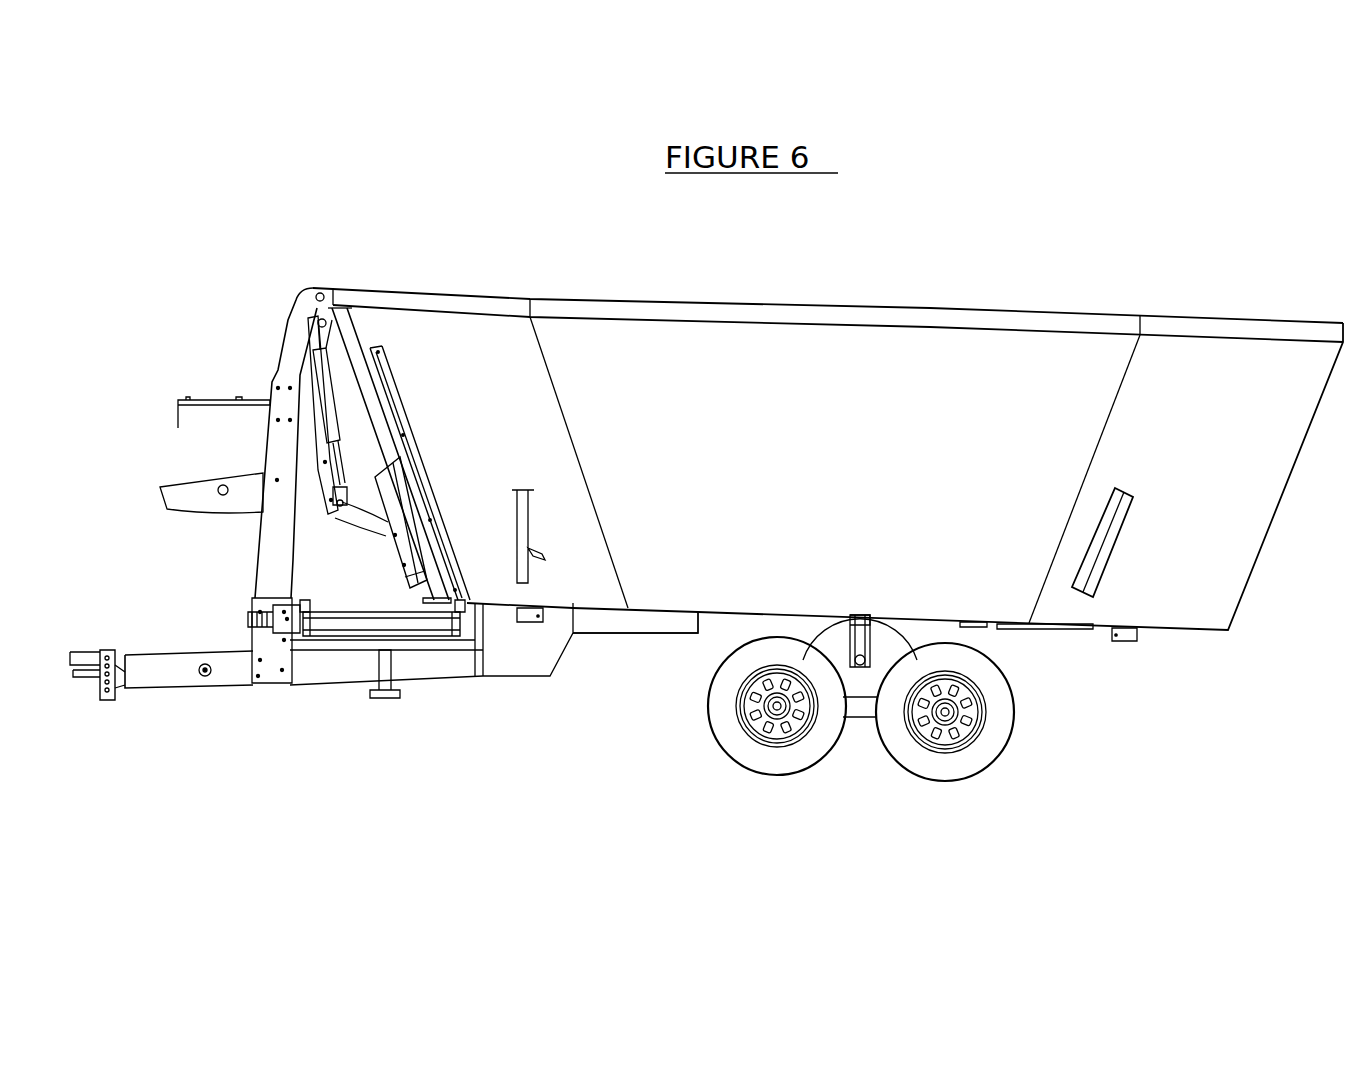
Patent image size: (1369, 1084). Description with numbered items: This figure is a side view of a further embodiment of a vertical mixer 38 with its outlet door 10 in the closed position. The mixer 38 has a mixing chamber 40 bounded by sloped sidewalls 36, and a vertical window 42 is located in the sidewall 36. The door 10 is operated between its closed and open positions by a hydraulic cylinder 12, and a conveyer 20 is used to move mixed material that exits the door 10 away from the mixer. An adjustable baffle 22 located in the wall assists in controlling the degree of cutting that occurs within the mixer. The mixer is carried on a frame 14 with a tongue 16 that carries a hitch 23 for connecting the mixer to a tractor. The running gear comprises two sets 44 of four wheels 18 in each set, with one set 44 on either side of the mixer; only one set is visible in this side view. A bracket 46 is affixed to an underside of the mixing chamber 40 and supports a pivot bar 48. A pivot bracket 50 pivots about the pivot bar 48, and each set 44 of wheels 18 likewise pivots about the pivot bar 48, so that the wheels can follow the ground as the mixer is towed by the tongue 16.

The outlet door 10 is at (355, 340).
The hydraulic cylinder 12 is at (313, 387).
The frame 14 is at (658, 625).
The tongue 16 is at (333, 668).
The wheels 18 is at (773, 765).
The conveyer 20 is at (327, 607).
The adjustable baffle 22 is at (543, 556).
The hitch coupler 23 is at (107, 700).
The sloped sidewall 36 is at (1175, 592).
The mixer 38 is at (985, 262).
The mixing chamber 40 is at (1070, 311).
The vertical window 42 is at (1108, 527).
The set of wheels 44 is at (1012, 723).
The bracket 46 is at (848, 620).
The pivot bar 48 is at (845, 648).
The pivot bracket 50 is at (888, 652).